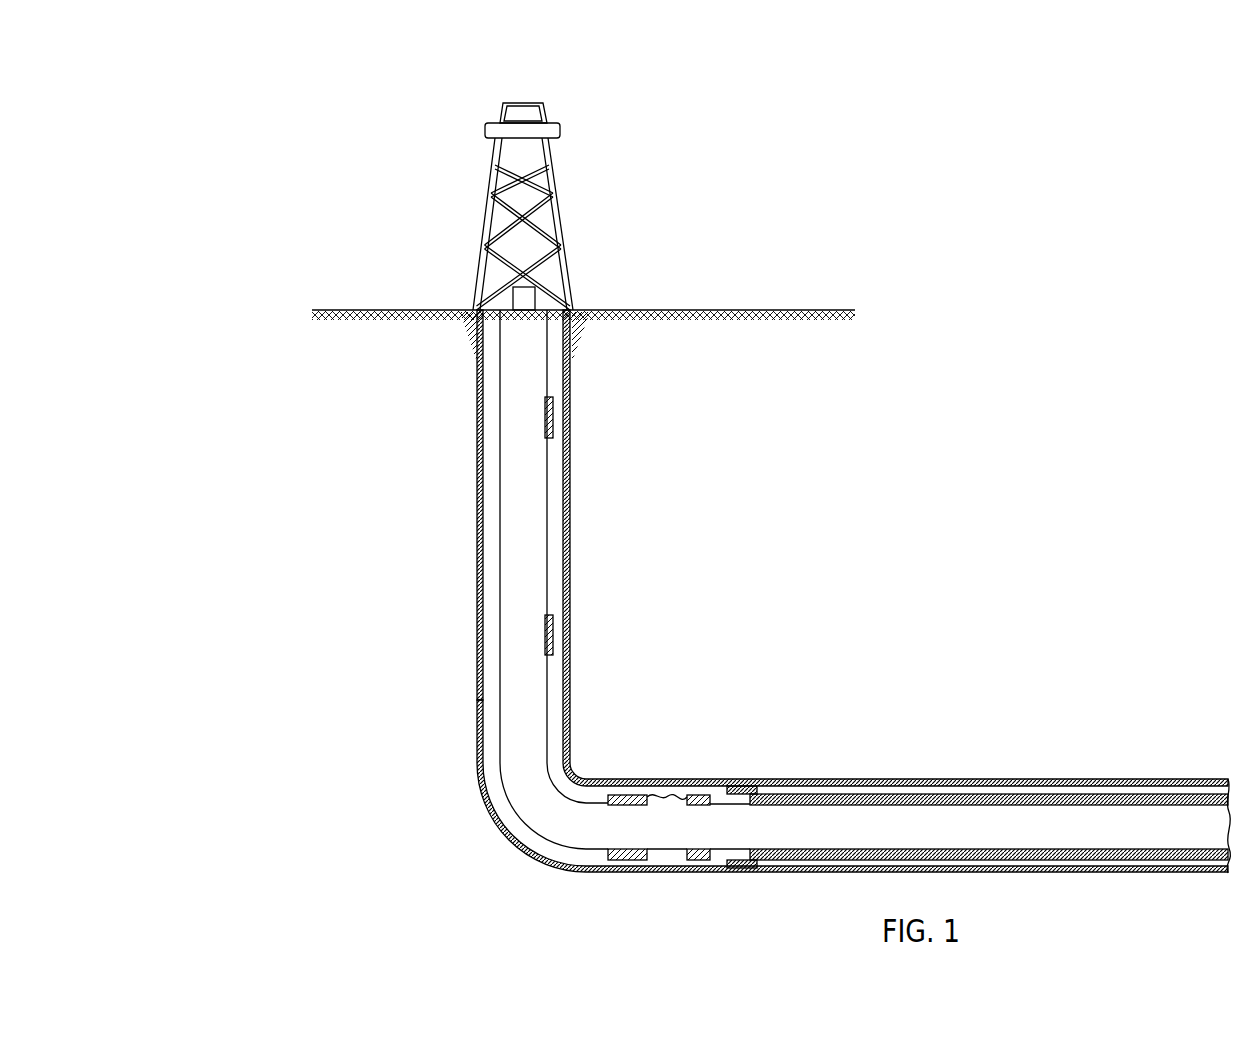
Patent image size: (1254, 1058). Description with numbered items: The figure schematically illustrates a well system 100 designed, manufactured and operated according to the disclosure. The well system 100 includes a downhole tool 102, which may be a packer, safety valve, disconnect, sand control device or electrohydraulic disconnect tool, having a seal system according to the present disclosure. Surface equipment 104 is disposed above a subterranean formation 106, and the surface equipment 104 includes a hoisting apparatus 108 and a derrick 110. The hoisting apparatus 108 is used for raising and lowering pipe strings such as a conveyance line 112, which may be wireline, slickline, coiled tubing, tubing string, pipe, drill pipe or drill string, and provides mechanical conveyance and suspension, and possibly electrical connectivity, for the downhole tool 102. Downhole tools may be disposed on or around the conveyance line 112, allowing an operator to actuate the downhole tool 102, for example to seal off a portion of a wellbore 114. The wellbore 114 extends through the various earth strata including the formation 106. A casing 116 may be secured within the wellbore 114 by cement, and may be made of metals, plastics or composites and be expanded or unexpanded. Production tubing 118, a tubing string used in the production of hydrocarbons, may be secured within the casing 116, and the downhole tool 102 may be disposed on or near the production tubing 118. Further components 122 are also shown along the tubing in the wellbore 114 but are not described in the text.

The well system 100 is at (320, 107).
The downhole tool 102 is at (740, 786).
The surface equipment 104 is at (487, 202).
The subterranean formation 106 is at (920, 620).
The hoisting apparatus 108 is at (532, 292).
The derrick 110 is at (552, 192).
The conveyance line 112 is at (505, 538).
The wellbore 114 is at (477, 625).
The casing 116 is at (477, 748).
The production tubing 118 is at (934, 795).
The downhole tool 122 is at (552, 413).